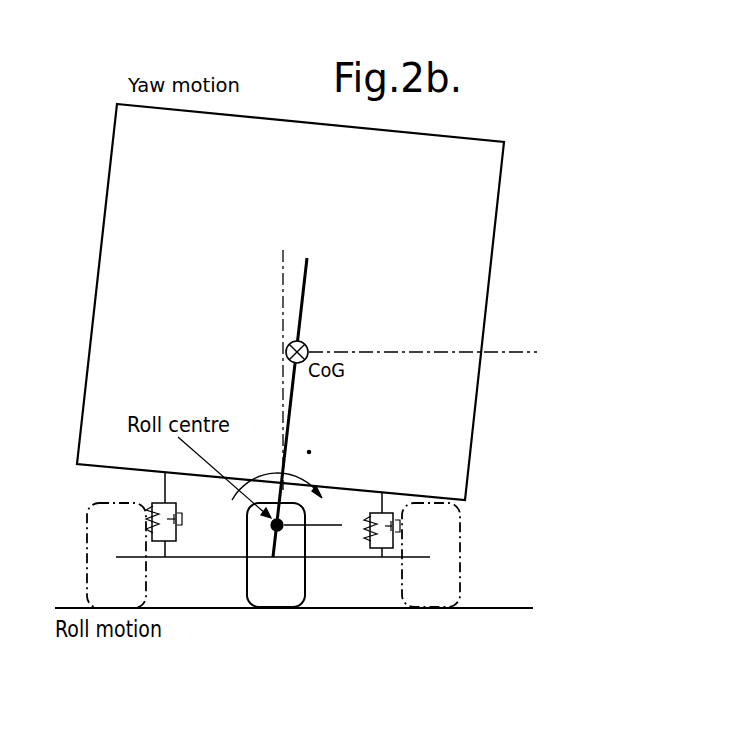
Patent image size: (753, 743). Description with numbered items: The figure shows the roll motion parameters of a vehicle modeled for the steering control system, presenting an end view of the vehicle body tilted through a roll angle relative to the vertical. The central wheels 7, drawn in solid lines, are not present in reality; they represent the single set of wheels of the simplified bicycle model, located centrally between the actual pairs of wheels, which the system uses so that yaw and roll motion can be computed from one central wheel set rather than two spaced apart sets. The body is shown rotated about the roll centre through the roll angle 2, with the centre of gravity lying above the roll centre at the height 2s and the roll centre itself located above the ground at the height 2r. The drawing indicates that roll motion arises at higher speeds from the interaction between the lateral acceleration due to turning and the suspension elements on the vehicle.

The central wheels 7 is at (288, 609).
The sprung body (roll angle φ2) 2 is at (337, 302).
The centre of gravity height h2s 2s is at (516, 353).
The roll centre height h2r 2r is at (326, 525).